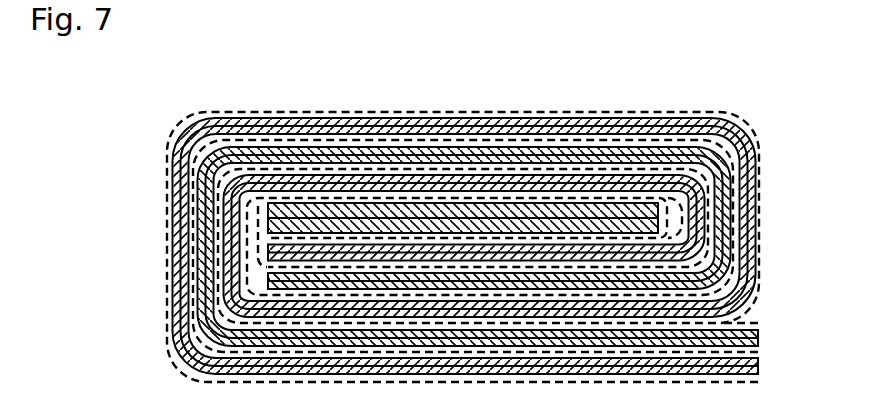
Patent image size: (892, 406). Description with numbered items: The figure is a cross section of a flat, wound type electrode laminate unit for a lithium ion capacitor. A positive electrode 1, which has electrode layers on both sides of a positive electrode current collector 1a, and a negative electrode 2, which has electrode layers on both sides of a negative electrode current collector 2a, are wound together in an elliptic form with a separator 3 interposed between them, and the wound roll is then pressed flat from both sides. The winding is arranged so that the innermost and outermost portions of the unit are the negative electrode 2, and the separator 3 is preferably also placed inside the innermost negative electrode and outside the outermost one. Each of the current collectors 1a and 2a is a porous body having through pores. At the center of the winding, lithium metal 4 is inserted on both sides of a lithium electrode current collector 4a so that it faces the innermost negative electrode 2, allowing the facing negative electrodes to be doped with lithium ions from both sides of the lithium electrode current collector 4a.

The positive electrode 1 is at (292, 155).
The positive electrode current collector 1a is at (352, 155).
The negative electrode 2 is at (595, 117).
The negative electrode current collector 2a is at (638, 127).
The separator 3 is at (548, 168).
The lithium metal 4 is at (657, 207).
The lithium electrode current collector 4a is at (657, 218).